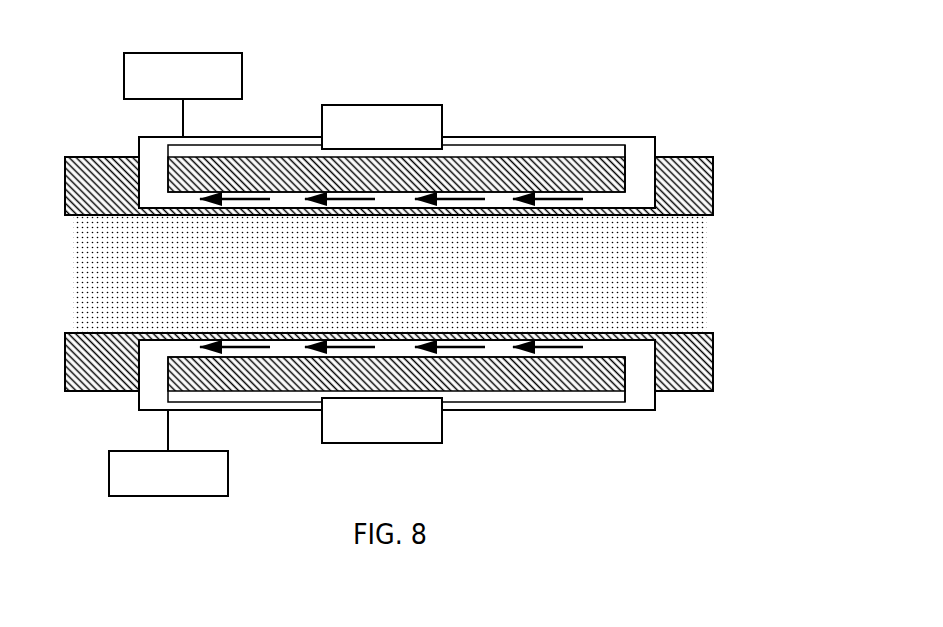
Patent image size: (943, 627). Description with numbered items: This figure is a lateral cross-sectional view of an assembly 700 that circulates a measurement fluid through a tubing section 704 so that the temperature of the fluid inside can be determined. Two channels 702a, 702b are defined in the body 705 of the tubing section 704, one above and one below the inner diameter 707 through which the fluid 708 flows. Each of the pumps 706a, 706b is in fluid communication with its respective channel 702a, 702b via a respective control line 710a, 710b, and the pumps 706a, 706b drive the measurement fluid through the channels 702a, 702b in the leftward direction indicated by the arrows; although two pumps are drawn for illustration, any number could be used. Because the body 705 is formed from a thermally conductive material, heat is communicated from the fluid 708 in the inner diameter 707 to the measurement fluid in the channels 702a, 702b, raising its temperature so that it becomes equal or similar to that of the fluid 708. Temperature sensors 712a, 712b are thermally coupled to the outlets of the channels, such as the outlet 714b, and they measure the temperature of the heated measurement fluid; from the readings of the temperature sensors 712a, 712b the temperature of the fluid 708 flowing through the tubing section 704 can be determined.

The assembly 700 is at (395, 274).
The channel 702a is at (647, 175).
The channel 702b is at (648, 378).
The tubing section 704 is at (68, 218).
The body 705 is at (698, 196).
The pump 706a is at (382, 127).
The pump 706b is at (382, 420).
The inner diameter 707 is at (713, 318).
The fluid 708 is at (706, 258).
The control line 710a is at (257, 130).
The control line 710b is at (258, 412).
The temperature sensor 712a is at (183, 95).
The temperature sensor 712b is at (168, 453).
The outlet 714b is at (147, 155).